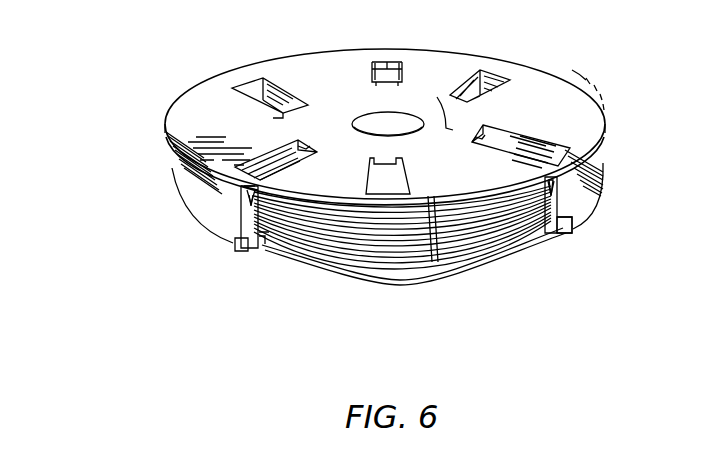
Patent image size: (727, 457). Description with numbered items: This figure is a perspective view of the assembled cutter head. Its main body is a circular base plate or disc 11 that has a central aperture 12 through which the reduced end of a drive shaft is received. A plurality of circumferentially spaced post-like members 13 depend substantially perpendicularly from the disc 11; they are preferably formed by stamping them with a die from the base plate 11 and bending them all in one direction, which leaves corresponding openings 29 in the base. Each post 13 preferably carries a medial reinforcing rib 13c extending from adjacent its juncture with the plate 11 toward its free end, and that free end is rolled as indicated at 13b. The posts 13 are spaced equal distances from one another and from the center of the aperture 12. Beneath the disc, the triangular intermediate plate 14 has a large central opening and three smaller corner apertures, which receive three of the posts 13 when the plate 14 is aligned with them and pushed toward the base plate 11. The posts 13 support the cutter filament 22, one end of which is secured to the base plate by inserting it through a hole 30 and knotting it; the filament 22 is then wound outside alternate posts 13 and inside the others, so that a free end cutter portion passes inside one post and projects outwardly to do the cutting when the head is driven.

The base plate 11 is at (425, 64).
The central aperture 12 is at (378, 118).
The post-like members 13 is at (245, 212).
The rolled free end 13b is at (243, 252).
The medial reinforcing rib 13c is at (250, 197).
The intermediate plate 14 is at (425, 275).
The filament 22 is at (578, 150).
The openings 29 is at (470, 85).
The hole 30 is at (462, 118).